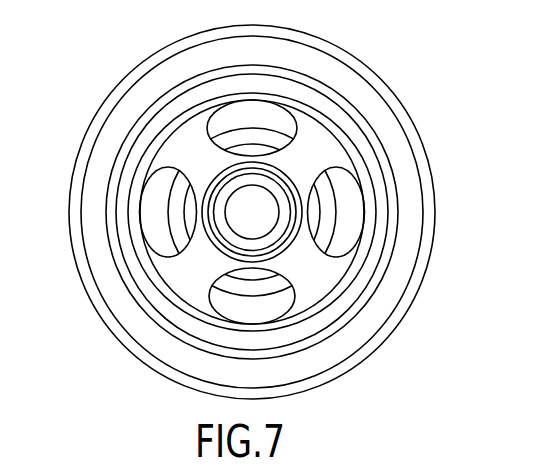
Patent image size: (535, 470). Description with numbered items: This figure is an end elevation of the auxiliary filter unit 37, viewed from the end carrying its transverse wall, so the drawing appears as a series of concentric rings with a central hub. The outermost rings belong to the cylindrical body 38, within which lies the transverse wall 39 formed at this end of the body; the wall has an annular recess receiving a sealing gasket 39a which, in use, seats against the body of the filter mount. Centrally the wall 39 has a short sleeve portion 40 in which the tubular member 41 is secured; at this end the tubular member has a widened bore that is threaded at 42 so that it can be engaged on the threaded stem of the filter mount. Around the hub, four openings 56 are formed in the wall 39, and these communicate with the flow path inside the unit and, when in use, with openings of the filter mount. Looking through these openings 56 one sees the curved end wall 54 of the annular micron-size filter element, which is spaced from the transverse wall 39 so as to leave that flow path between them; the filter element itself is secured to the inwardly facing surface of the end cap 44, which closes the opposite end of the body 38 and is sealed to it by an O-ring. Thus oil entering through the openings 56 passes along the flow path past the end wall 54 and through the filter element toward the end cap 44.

The unit 37 is at (388, 72).
The cylindrical body 38 is at (373, 103).
The transverse wall 39 is at (367, 157).
The sealing gasket 39a is at (390, 242).
The sleeve portion 40 is at (197, 221).
The tubular member 41 is at (222, 258).
The thread 42 is at (213, 213).
The end cap 44 is at (335, 51).
The end wall 54 is at (327, 210).
The openings 56 is at (227, 307).